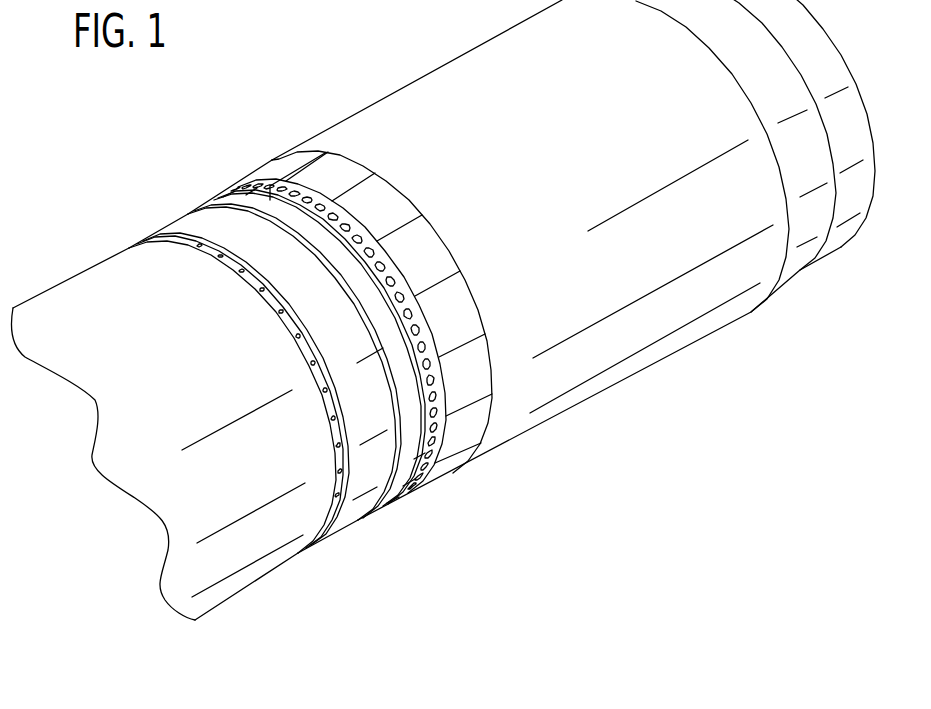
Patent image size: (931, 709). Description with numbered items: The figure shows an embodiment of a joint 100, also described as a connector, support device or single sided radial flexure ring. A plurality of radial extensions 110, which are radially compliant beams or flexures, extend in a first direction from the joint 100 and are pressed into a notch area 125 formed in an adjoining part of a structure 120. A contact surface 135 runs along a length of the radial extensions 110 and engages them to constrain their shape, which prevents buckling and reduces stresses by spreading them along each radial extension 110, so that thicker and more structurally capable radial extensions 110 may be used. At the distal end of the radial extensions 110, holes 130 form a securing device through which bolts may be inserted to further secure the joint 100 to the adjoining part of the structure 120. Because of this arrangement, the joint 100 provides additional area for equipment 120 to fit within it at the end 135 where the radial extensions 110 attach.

The joint 100 is at (475, 72).
The radial extensions 110 is at (284, 167).
The adjoining part of a structure 120 is at (245, 540).
The notch area 125 is at (292, 335).
The holes 130 is at (377, 253).
The contact surface 135 is at (465, 273).